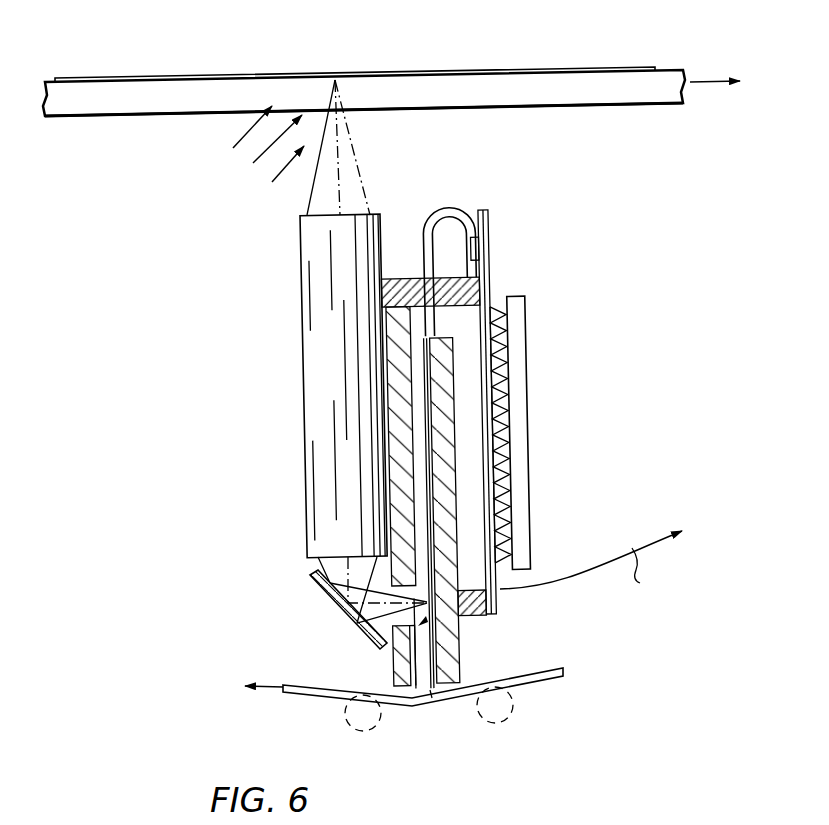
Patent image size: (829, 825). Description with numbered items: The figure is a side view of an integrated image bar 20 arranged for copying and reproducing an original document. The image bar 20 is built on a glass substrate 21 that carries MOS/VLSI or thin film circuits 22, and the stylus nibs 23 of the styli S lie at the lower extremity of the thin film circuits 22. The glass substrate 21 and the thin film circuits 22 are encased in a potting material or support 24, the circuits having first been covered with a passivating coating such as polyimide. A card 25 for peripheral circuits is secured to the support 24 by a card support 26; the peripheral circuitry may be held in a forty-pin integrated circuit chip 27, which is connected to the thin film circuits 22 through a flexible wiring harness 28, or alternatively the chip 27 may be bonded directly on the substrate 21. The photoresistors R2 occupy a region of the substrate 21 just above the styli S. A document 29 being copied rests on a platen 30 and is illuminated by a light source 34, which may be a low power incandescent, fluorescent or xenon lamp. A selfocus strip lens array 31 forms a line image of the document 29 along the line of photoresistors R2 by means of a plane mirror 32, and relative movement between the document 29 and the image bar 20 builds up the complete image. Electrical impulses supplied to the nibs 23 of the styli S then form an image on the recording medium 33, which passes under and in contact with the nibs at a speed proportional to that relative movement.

The image bar 20 is at (412, 198).
The glass substrate 21 is at (388, 406).
The thin film circuits 22 is at (428, 440).
The stylus nibs 23 is at (437, 698).
The support 24 is at (393, 664).
The card 25 is at (488, 253).
The card support 26 is at (400, 280).
The integrated circuit chip 27 is at (522, 300).
The flexible wiring harness 28 is at (457, 209).
The document 29 is at (183, 80).
The platen 30 is at (172, 108).
The selfocus lens array 31 is at (303, 374).
The plane mirror 32 is at (330, 600).
The recording medium 33 is at (558, 678).
The light source 34 is at (262, 151).
The photoresistors R2 is at (413, 686).
The styli S is at (425, 682).